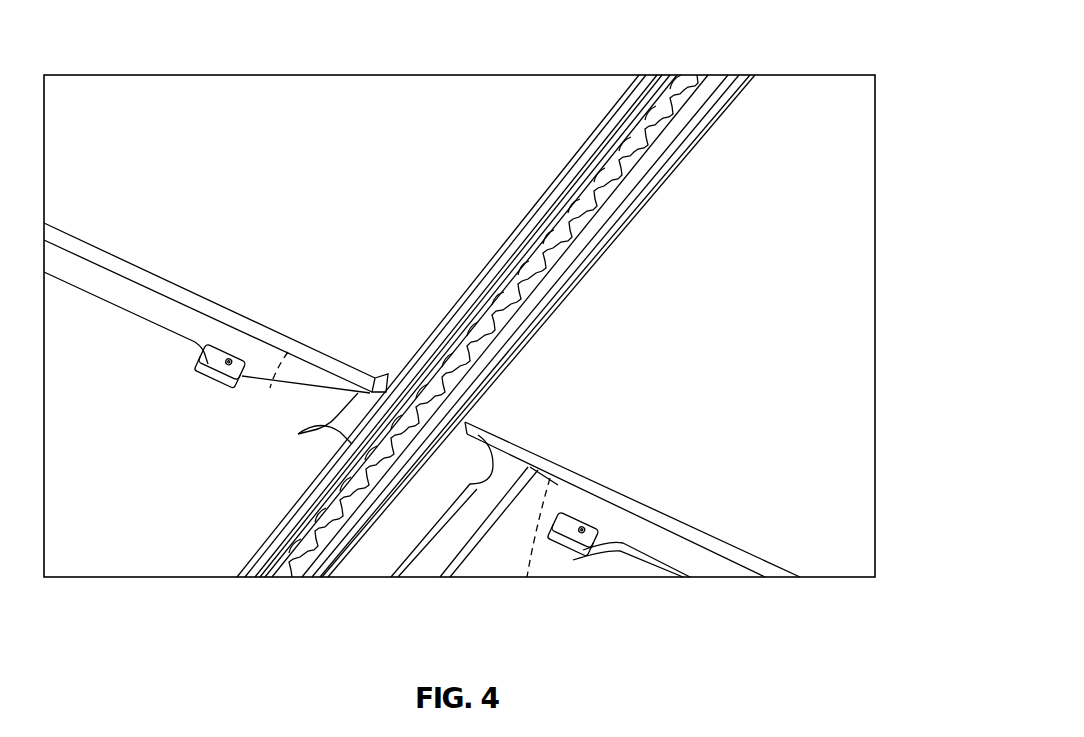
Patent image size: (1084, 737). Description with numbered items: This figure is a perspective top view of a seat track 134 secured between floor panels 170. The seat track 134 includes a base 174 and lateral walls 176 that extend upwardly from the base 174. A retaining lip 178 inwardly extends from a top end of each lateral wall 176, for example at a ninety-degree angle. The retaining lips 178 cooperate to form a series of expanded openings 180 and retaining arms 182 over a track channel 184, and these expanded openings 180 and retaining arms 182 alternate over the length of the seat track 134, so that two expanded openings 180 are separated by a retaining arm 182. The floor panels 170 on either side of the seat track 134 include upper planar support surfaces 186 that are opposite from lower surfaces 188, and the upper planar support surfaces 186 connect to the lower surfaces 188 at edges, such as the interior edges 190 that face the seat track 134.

The seat track 134 is at (518, 258).
The floor panels 170 is at (468, 92).
The base 174 is at (453, 530).
The lateral walls 176 is at (373, 507).
The retaining lip 178 is at (327, 540).
The expanded openings 180 is at (288, 550).
The retaining arms 182 is at (363, 493).
The track channel 184 is at (692, 85).
The upper planar support surfaces 186 is at (543, 102).
The lower surfaces 188 is at (396, 495).
The interior edges 190 is at (635, 93).